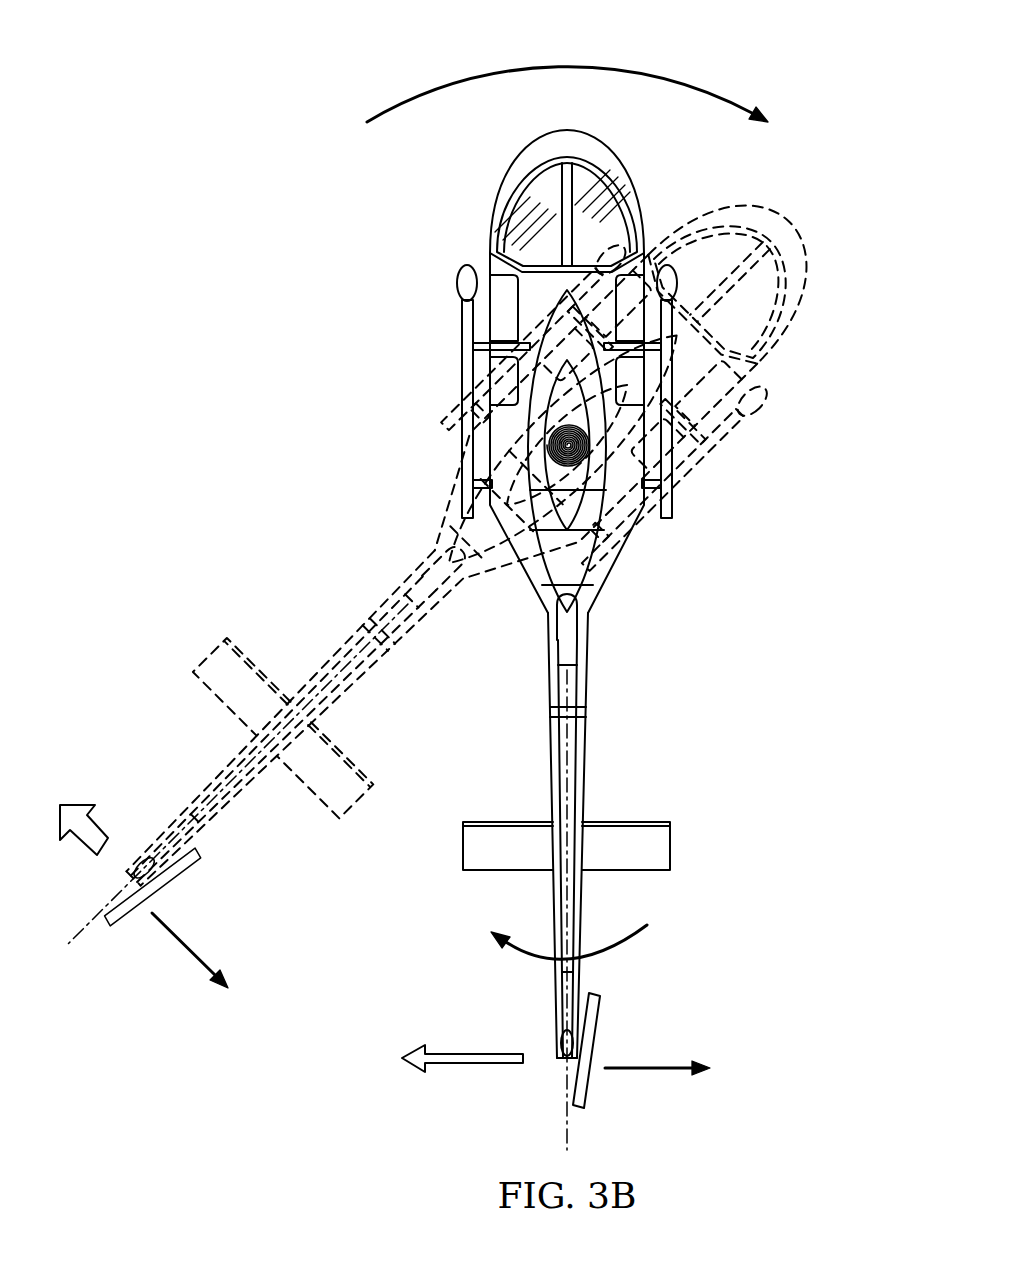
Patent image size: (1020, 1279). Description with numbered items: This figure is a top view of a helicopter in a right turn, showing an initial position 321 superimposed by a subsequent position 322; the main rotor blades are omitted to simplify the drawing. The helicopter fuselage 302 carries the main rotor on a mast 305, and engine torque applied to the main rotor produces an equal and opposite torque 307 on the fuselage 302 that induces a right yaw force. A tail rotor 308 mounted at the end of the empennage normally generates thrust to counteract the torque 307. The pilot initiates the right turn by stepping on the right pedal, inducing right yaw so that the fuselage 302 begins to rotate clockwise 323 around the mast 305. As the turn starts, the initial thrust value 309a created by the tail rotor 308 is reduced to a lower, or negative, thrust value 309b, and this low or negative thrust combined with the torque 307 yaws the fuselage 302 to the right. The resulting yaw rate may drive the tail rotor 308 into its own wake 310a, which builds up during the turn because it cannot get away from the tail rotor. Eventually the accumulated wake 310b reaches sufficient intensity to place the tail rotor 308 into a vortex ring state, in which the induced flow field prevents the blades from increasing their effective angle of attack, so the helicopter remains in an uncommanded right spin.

The fuselage 302 is at (778, 337).
The mast 305 is at (566, 445).
The torque 307 is at (537, 953).
The tail rotor 308 is at (594, 1037).
The initial thrust value 309a is at (650, 1070).
The lower or negative thrust value 309b is at (178, 945).
The tail rotor wake 310a is at (478, 1068).
The accumulated tail rotor wake 310b is at (80, 847).
The initial position 321 is at (602, 640).
The subsequent position 322 is at (462, 582).
The clockwise rotation 323 is at (553, 65).